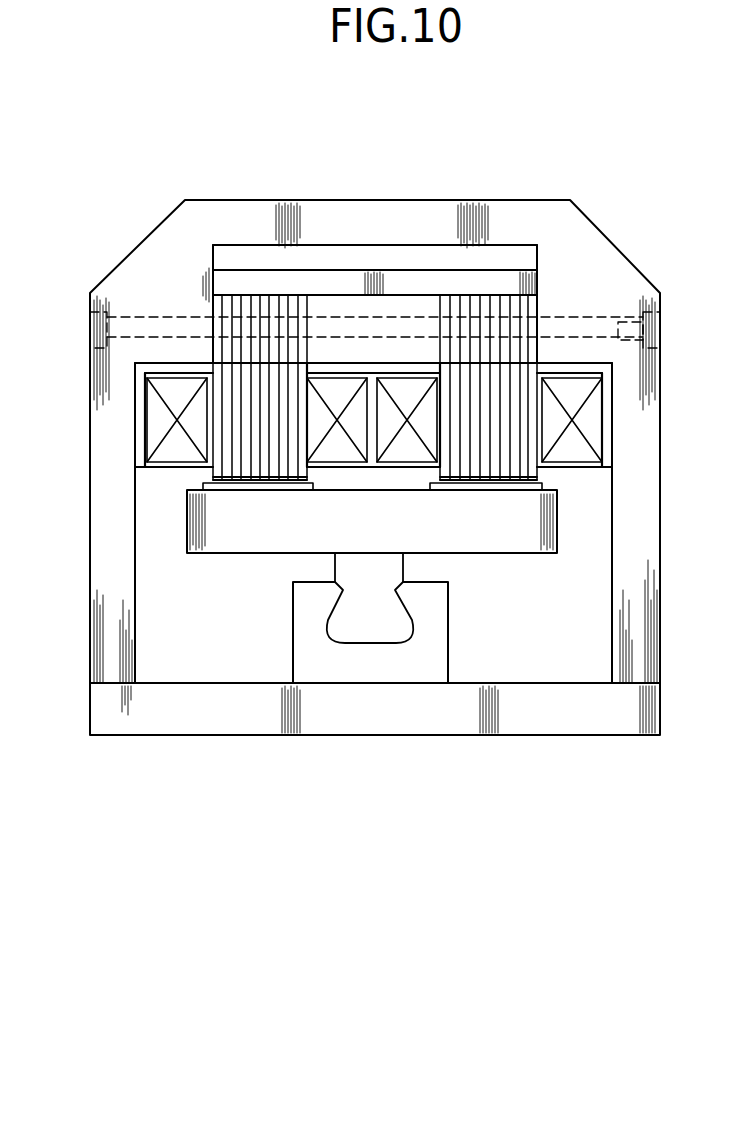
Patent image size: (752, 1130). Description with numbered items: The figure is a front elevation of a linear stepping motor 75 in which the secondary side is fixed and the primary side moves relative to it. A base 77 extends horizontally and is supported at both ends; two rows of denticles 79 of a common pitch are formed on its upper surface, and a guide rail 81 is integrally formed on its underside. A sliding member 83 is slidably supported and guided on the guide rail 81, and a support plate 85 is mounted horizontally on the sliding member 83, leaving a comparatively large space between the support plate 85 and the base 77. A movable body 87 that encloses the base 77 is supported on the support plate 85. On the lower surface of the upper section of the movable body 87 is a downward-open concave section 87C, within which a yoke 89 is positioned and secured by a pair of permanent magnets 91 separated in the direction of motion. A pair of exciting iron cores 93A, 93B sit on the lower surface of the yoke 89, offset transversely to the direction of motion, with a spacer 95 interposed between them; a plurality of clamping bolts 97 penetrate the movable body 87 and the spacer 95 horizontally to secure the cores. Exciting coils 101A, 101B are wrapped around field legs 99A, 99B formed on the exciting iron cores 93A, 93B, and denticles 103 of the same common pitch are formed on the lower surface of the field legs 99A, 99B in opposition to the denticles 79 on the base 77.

The linear stepping motor 75 is at (579, 181).
The base 77 is at (468, 545).
The denticles 79 is at (240, 490).
The guide rail 81 is at (400, 628).
The sliding member 83 is at (334, 672).
The support plate 85 is at (417, 724).
The movable body 87 is at (228, 210).
The concave section 87C is at (213, 283).
The yoke 89 is at (492, 260).
The permanent magnets 91 is at (530, 283).
The exciting iron core 93A is at (537, 306).
The exciting iron core 93B is at (210, 306).
The spacer 95 is at (371, 298).
The clamping bolts 97 is at (110, 343).
The field legs 99A is at (537, 475).
The field legs 99B is at (213, 472).
The exciting coils 101A is at (592, 420).
The exciting coils 101B is at (148, 412).
The denticles 103 is at (227, 487).